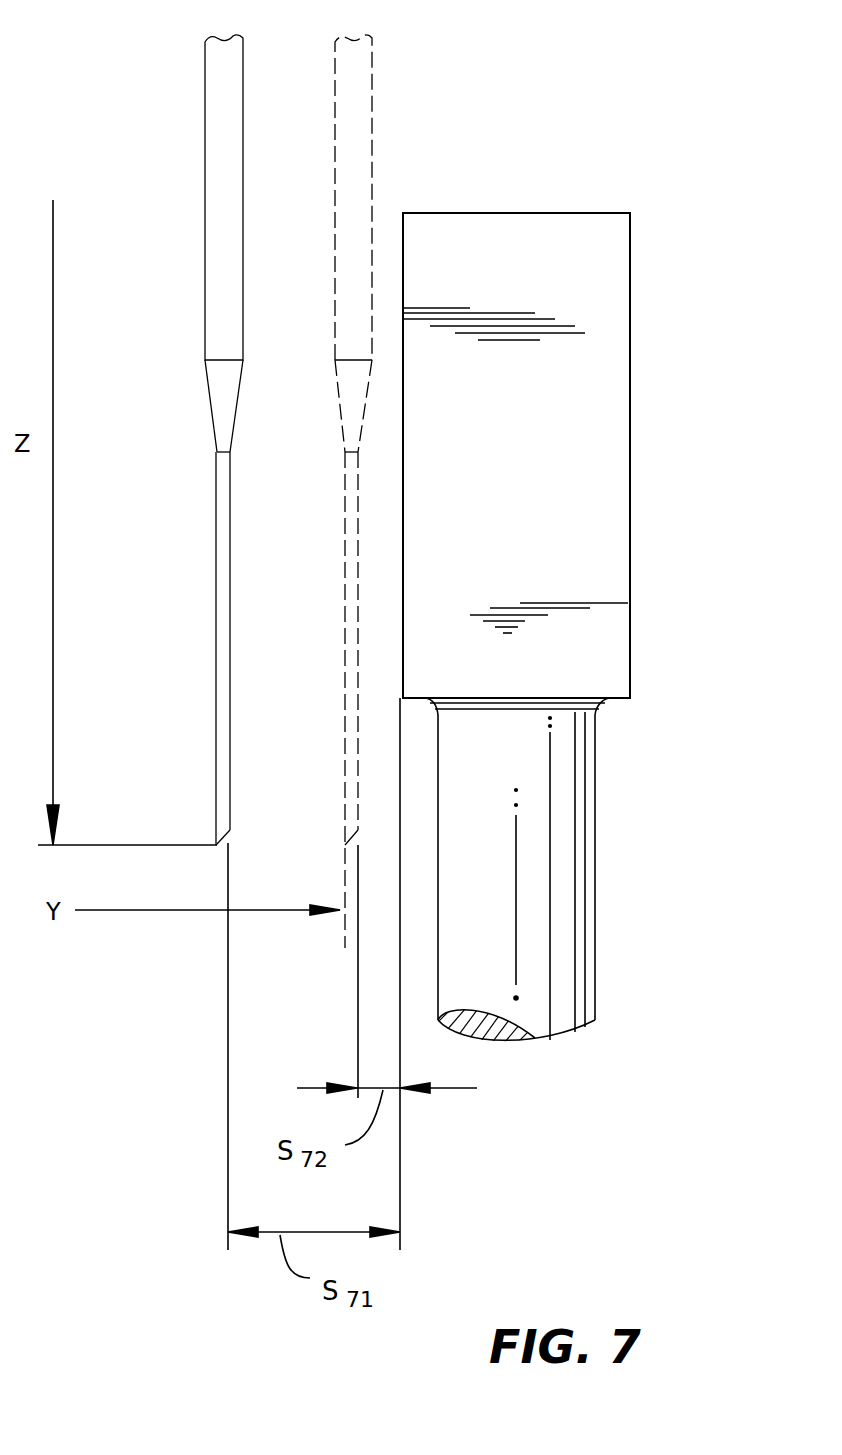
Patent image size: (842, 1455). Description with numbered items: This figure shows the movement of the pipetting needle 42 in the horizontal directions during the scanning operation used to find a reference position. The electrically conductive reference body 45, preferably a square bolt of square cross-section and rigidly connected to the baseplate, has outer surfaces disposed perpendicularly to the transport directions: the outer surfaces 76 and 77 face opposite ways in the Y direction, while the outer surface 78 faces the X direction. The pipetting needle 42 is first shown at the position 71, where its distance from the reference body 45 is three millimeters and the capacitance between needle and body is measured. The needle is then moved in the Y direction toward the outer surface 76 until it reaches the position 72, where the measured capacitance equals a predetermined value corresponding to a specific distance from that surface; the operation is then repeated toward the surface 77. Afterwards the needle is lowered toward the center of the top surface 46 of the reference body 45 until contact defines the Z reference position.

The position of the pipetting needle 71 is at (220, 87).
The position of the pipetting needle 72 is at (372, 55).
The pipetting needle 42 is at (195, 181).
The top surface of the reference body 46 is at (505, 213).
The reference body 45 is at (605, 445).
The outer surface of the reference body 76 is at (401, 262).
The outer surface of the reference body 77 is at (632, 345).
The outer surface of the reference body 78 is at (601, 549).